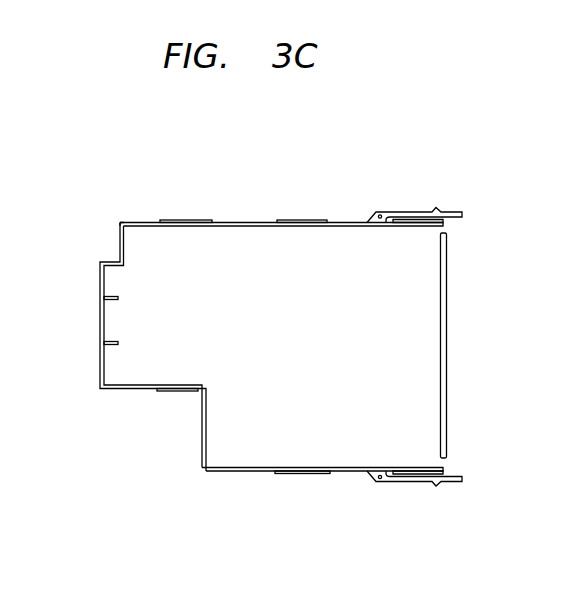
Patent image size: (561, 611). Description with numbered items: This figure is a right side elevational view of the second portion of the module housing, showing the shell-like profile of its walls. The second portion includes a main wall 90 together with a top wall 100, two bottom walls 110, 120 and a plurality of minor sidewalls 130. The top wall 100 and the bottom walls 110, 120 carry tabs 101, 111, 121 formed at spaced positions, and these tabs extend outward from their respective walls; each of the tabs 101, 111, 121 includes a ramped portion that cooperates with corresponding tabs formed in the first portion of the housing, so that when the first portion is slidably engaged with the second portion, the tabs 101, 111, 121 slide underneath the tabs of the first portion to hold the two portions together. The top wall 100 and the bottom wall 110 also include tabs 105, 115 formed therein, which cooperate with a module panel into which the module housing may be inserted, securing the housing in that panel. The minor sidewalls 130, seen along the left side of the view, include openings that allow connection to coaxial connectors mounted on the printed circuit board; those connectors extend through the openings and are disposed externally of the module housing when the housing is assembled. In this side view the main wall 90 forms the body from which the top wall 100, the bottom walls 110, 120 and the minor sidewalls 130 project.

The main wall 90 is at (128, 237).
The top wall 100 is at (243, 222).
The tabs 101 is at (180, 221).
The tab 105 is at (413, 212).
The bottom wall 110 is at (243, 472).
The tabs 111 is at (307, 474).
The tab 115 is at (402, 483).
The bottom wall 120 is at (115, 392).
The tabs 121 is at (172, 392).
The minor sidewalls 130 is at (118, 247).